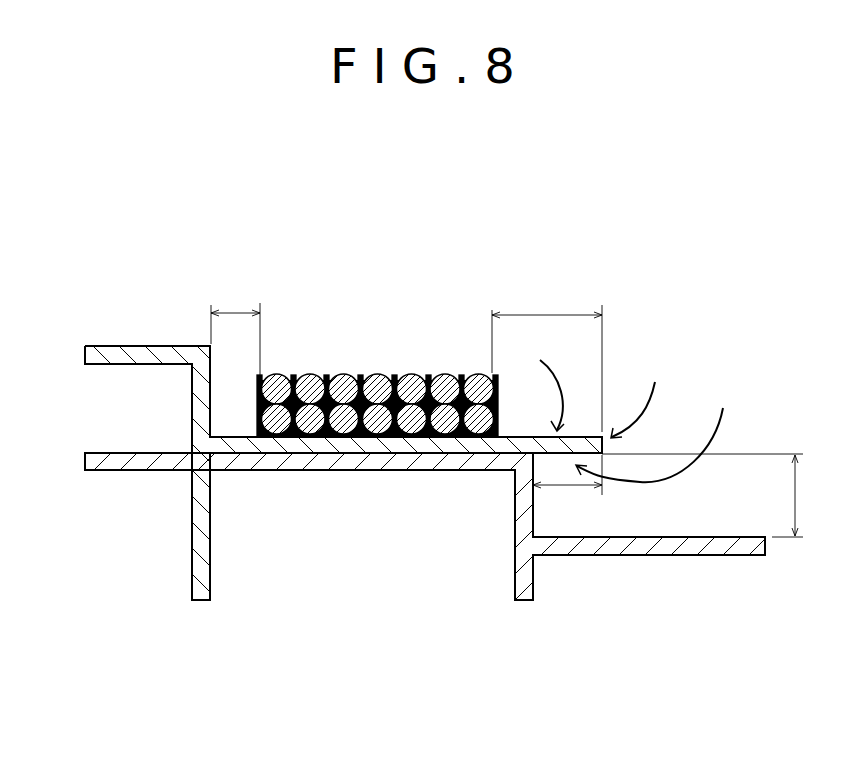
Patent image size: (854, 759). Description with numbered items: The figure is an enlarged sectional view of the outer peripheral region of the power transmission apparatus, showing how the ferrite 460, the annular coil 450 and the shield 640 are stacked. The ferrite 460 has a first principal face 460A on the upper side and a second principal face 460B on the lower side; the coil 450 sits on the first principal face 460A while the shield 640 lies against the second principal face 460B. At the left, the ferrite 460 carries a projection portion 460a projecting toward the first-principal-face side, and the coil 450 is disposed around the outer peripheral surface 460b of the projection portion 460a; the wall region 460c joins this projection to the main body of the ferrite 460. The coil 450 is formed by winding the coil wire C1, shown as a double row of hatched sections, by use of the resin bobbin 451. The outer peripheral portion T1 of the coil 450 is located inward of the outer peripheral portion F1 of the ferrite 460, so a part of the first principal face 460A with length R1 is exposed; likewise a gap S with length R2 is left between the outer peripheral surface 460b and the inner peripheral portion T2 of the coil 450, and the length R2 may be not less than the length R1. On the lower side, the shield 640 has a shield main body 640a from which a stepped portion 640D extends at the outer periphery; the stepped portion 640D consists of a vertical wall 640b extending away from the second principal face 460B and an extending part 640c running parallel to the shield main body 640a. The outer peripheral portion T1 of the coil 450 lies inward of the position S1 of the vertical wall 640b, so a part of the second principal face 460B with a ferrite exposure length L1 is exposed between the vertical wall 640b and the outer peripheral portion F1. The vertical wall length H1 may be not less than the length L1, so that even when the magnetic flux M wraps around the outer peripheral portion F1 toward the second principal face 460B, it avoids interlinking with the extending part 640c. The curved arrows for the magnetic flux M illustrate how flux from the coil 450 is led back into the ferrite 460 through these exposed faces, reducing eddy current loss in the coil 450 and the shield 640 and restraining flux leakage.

The ferrite 460 is at (312, 409).
The projection portion 460a is at (98, 346).
The outer peripheral surface 460b is at (218, 437).
The side wall portion 460c is at (212, 424).
The first principal face 460A is at (577, 437).
The second principal face 460B is at (236, 455).
The shield 640 is at (425, 598).
The shield main body 640a is at (406, 471).
The vertical wall 640b is at (515, 512).
The extending part 640c is at (653, 602).
The stepped portion 640D is at (615, 591).
The annular coil 450 is at (409, 389).
The resin bobbin 451 is at (358, 376).
The coil wire C1 is at (377, 365).
The gap S is at (233, 393).
The position of the vertical wall S1 is at (533, 512).
The magnetic flux M is at (555, 386).
The ferrite exposure length L1 is at (567, 483).
The vertical wall length H1 is at (715, 495).
The length of exposed part of first principal face R1 is at (547, 361).
The length of the gap R2 is at (235, 329).
The outer peripheral portion of the coil T1 is at (489, 299).
The inner peripheral portion of the coil T2 is at (267, 293).
The outer peripheral portion of the ferrite F1 is at (602, 299).